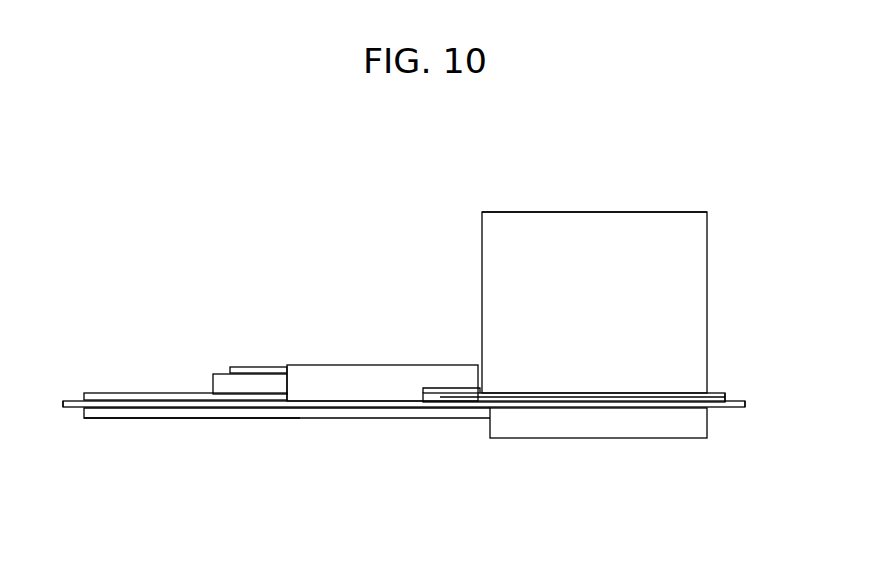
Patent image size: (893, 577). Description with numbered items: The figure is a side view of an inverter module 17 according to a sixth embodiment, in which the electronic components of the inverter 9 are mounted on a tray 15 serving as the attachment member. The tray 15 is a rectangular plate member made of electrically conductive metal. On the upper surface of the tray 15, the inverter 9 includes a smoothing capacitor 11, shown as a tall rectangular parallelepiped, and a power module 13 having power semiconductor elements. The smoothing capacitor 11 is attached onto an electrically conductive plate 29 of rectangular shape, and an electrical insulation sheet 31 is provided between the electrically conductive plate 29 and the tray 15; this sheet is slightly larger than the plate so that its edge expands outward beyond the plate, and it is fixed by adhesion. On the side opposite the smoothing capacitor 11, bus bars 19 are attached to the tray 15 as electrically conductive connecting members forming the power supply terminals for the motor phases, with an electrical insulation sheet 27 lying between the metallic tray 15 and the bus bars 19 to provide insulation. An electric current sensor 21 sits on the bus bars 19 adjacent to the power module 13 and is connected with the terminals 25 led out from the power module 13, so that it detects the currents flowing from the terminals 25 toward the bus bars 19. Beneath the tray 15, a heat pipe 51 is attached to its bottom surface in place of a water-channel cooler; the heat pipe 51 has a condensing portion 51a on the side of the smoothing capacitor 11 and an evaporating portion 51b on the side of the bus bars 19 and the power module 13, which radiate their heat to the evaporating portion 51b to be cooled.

The inverter 9 is at (556, 212).
The smoothing capacitor 11 is at (658, 212).
The power module 13 is at (375, 365).
The tray 15 is at (68, 407).
The inverter module 17 is at (400, 238).
The bus bars 19 is at (118, 393).
The electric current sensor 21 is at (213, 378).
The terminals 25 is at (240, 367).
The electrical insulation sheet 27 is at (77, 400).
The electrically conductive plate 29 is at (617, 393).
The electrical insulation sheet 31 is at (727, 401).
The heat pipe 51 is at (323, 418).
The condensing portion 51a is at (603, 438).
The evaporating portion 51b is at (197, 418).